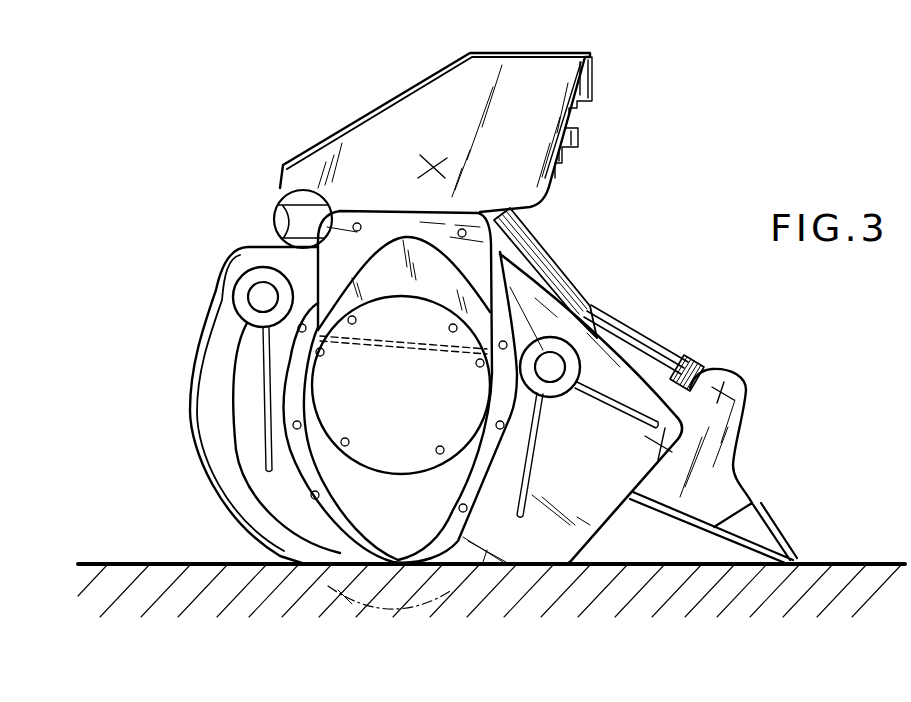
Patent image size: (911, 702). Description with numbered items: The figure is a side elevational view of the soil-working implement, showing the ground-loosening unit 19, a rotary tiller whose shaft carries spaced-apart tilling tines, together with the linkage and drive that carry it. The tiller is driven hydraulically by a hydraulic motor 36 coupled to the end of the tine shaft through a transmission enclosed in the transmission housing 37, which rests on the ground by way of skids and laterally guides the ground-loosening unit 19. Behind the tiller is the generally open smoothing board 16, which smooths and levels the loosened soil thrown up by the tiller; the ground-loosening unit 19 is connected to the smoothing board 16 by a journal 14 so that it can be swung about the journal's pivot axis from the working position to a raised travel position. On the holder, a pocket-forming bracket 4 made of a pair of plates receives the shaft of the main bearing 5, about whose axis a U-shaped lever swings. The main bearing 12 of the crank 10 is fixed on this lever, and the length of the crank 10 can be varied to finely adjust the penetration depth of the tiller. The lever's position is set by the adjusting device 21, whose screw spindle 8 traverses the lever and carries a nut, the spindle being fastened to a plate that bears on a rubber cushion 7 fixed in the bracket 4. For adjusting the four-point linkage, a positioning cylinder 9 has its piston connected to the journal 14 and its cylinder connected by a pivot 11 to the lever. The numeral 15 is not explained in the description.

The bracket 4 is at (428, 108).
The main bearing 5 is at (292, 222).
The rubber cushion 7 is at (583, 88).
The screw spindle 8 is at (556, 175).
The positioning cylinder 9 is at (548, 270).
The crank 10 is at (643, 352).
The pivot 11 is at (428, 170).
The main bearing 12 is at (382, 185).
The journal 14 is at (645, 448).
The bucket back 15 is at (746, 390).
The smoothing board 16 is at (702, 528).
The ground-loosening unit 19 is at (306, 566).
The adjusting device 21 is at (716, 448).
The hydraulic motor 36 is at (478, 242).
The transmission housing 37 is at (340, 476).